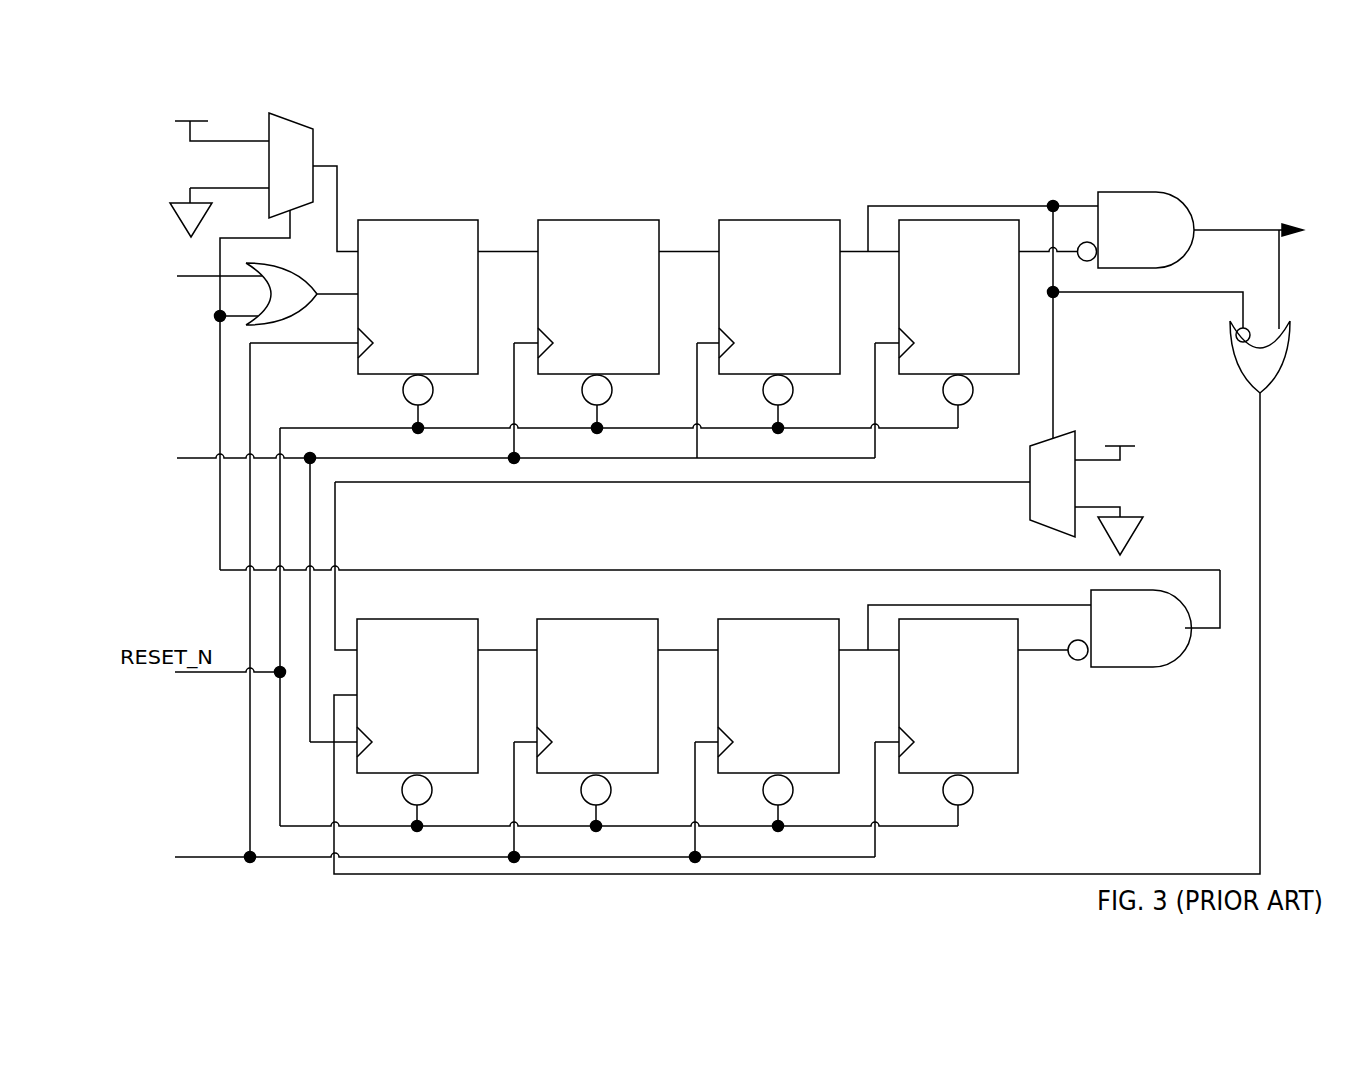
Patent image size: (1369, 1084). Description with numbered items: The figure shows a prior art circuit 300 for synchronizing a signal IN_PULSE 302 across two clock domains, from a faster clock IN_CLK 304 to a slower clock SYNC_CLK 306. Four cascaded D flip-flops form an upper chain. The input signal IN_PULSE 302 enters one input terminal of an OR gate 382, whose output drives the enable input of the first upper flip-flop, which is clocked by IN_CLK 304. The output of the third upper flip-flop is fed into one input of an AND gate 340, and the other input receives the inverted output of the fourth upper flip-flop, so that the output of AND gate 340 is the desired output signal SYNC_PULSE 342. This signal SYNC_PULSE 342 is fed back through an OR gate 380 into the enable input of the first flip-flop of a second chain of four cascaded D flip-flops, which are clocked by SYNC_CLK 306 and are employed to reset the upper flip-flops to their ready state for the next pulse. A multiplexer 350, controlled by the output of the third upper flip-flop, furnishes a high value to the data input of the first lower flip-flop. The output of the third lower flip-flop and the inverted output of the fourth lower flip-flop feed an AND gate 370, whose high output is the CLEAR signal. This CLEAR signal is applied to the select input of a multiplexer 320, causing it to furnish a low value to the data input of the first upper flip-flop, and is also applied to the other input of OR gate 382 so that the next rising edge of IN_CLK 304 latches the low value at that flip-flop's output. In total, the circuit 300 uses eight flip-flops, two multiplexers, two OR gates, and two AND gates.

The prior art circuit 300 is at (568, 148).
The signal IN_PULSE 302 is at (168, 278).
The clock IN_CLK 304 is at (165, 859).
The clock SYNC_CLK 306 is at (165, 460).
The multiplexer 320 is at (313, 133).
The AND gate 340 is at (1192, 222).
The signal SYNC_PULSE 342 is at (1260, 480).
The multiplexer 350 is at (1030, 456).
The AND gate 370 is at (1162, 660).
The OR gate 380 is at (1240, 372).
The OR gate 382 is at (305, 283).